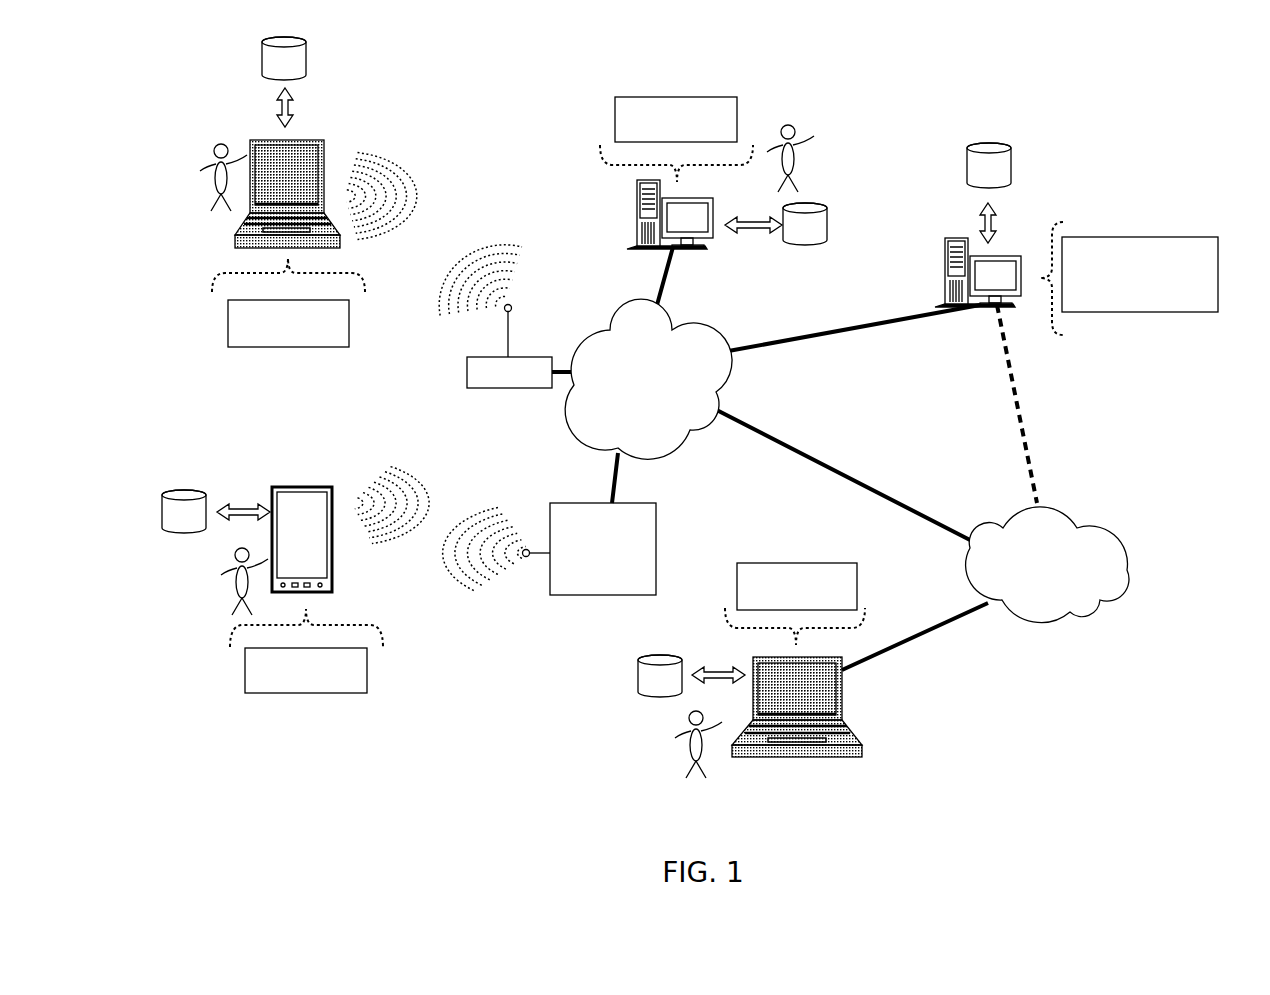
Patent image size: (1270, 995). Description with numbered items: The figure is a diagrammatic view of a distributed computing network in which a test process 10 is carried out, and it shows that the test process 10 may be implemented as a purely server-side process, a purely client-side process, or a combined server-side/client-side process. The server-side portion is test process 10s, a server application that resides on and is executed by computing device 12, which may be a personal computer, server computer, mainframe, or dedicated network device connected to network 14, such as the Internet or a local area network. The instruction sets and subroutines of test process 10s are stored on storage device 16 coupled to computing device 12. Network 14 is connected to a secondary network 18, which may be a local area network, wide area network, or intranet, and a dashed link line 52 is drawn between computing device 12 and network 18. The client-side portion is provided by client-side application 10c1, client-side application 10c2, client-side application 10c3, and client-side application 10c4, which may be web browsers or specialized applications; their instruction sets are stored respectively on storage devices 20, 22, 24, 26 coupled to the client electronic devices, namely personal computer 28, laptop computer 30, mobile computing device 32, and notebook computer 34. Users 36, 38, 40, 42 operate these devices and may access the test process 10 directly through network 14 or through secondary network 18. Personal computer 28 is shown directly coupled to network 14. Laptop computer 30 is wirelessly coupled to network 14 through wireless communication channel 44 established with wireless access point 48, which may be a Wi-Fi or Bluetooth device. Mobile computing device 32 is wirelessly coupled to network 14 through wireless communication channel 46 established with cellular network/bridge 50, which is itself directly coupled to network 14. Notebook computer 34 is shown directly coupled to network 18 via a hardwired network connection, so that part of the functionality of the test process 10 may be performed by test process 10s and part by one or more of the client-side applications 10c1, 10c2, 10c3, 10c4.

The test process 10 is at (1083, 100).
The computing device 12 is at (948, 253).
The network 14 is at (648, 379).
The storage device 16 is at (989, 165).
The secondary network 18 is at (1047, 565).
The storage device 20 is at (805, 224).
The storage device 22 is at (284, 58).
The storage device 24 is at (184, 511).
The storage device 26 is at (660, 676).
The personal computer 28 is at (715, 212).
The laptop computer 30 is at (325, 164).
The mobile computing device 32 is at (333, 537).
The notebook computer 34 is at (843, 700).
The user 36 is at (808, 138).
The user 38 is at (186, 171).
The user 40 is at (221, 560).
The user 42 is at (663, 735).
The wireless communication channel 44 is at (455, 211).
The wireless communication channel 46 is at (447, 503).
The wireless access point (WAP) 48 is at (467, 370).
The cellular network/bridge 50 is at (656, 518).
The dashed link line 52 is at (990, 410).
The client-side application 10c1 is at (737, 122).
The client-side application 10c2 is at (349, 322).
The client-side application 10c3 is at (367, 672).
The client-side application 10c4 is at (857, 580).
The test process 10s is at (1218, 265).